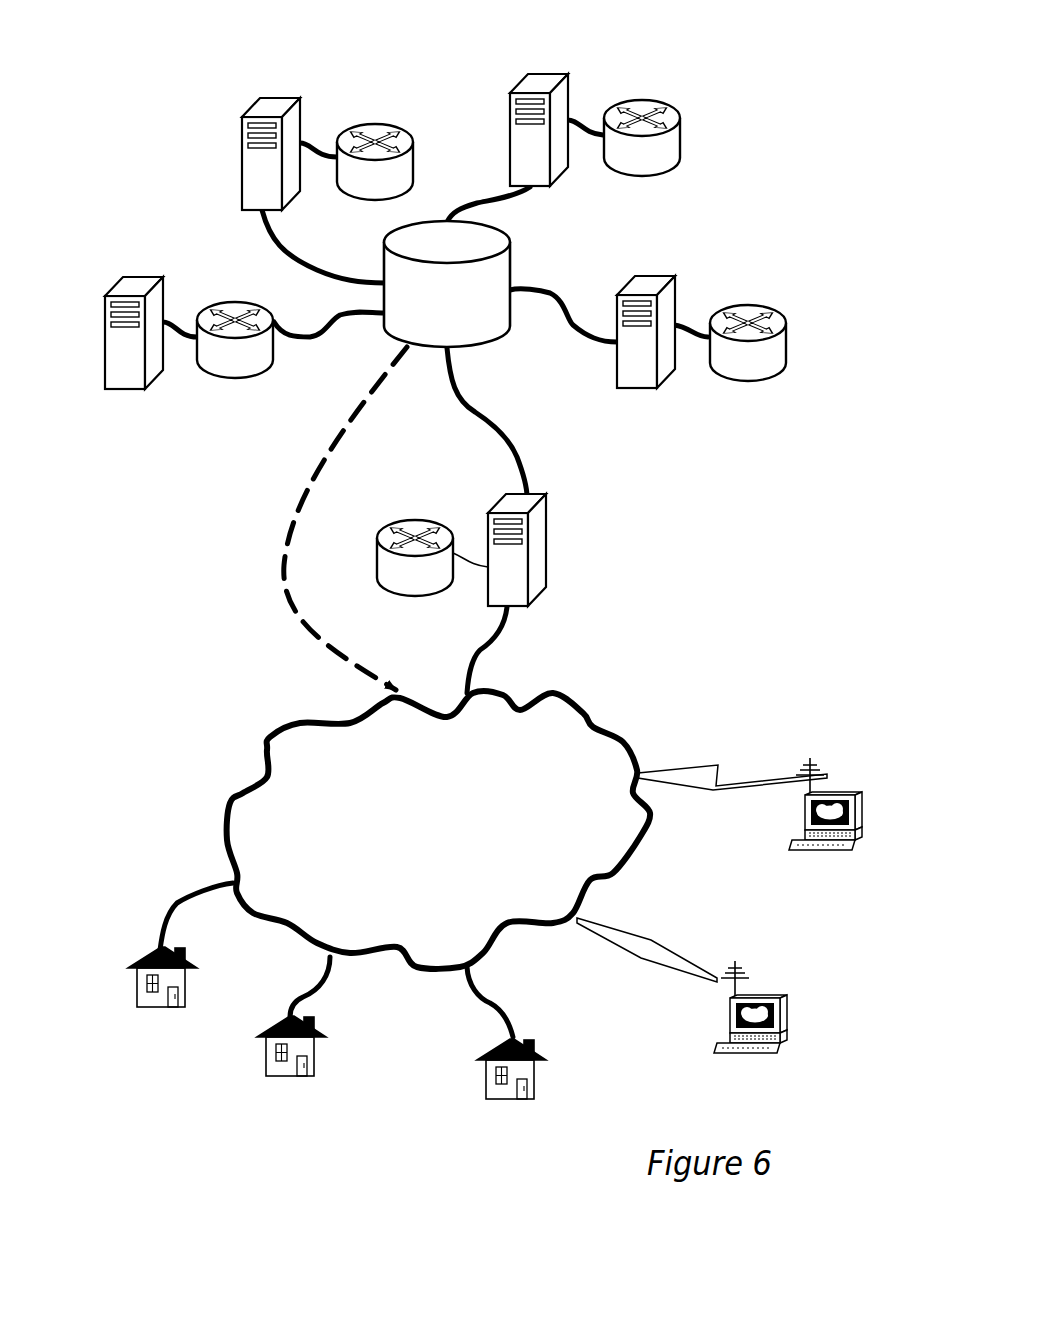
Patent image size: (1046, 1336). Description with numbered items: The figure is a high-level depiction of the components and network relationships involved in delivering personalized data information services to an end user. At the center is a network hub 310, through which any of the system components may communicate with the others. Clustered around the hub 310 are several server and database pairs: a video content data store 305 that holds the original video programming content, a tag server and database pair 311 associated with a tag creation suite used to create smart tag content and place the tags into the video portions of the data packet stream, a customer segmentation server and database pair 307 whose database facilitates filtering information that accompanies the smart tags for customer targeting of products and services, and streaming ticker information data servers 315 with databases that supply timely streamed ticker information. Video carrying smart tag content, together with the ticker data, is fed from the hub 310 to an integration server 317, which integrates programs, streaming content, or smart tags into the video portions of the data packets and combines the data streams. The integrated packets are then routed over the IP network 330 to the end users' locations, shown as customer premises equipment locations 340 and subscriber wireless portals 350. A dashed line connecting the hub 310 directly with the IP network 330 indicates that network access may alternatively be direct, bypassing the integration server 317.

The video content data store server and database pair 305 is at (282, 94).
The customer segmentation server and database pair 307 is at (143, 275).
The network hub 310 is at (447, 284).
The tag server and database pair 311 is at (549, 70).
The streaming ticker information data servers 315 is at (636, 393).
The integration server 317 is at (553, 542).
The IP network 330 is at (439, 830).
The customer premises equipment location 340 is at (161, 1012).
The subscriber wireless portal 350 is at (822, 858).